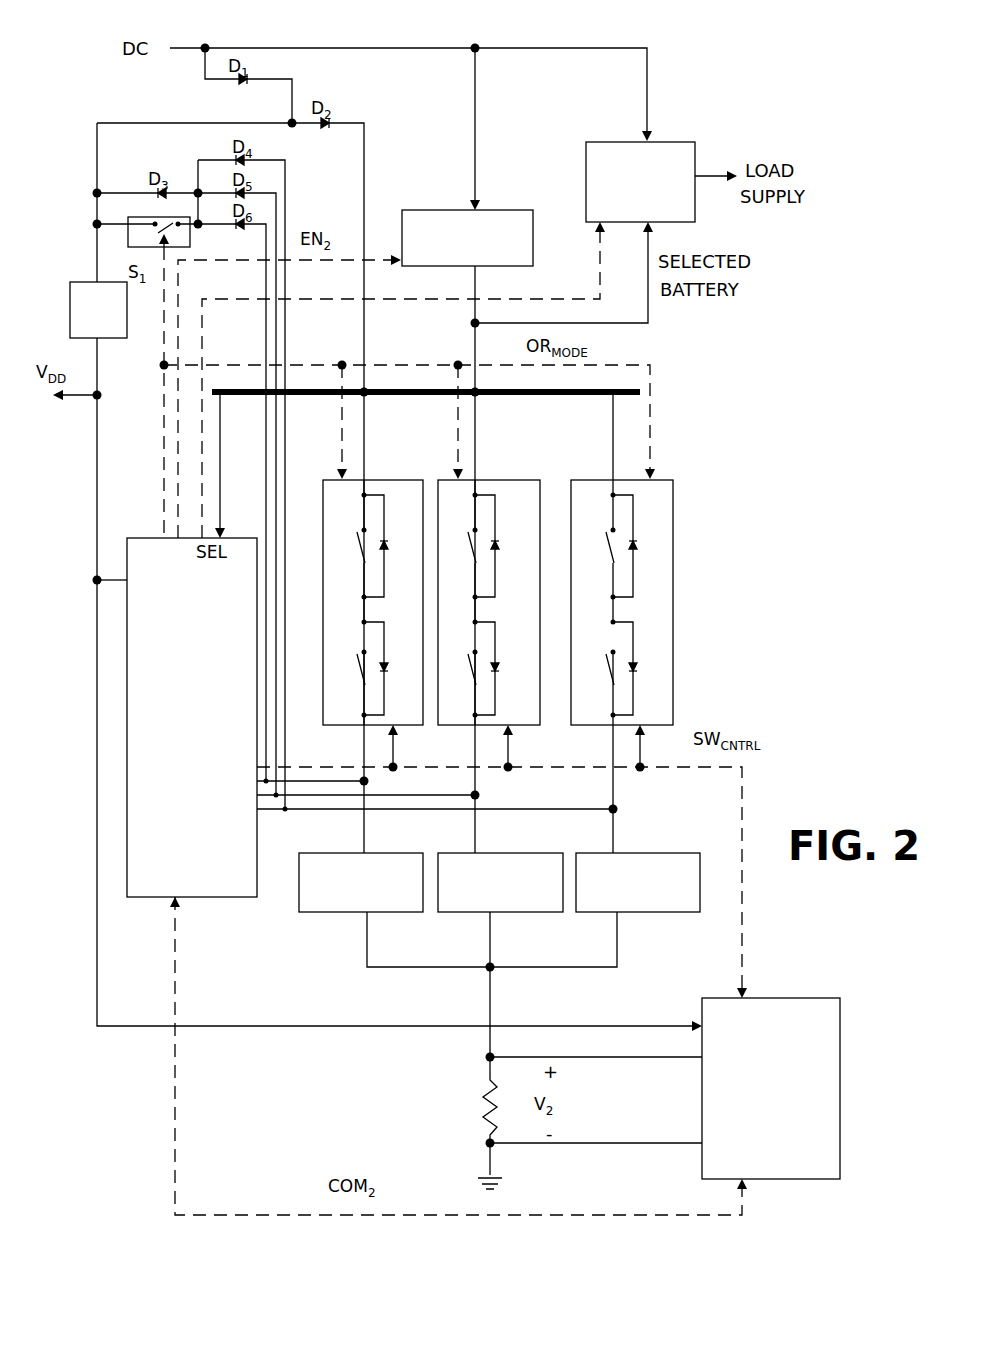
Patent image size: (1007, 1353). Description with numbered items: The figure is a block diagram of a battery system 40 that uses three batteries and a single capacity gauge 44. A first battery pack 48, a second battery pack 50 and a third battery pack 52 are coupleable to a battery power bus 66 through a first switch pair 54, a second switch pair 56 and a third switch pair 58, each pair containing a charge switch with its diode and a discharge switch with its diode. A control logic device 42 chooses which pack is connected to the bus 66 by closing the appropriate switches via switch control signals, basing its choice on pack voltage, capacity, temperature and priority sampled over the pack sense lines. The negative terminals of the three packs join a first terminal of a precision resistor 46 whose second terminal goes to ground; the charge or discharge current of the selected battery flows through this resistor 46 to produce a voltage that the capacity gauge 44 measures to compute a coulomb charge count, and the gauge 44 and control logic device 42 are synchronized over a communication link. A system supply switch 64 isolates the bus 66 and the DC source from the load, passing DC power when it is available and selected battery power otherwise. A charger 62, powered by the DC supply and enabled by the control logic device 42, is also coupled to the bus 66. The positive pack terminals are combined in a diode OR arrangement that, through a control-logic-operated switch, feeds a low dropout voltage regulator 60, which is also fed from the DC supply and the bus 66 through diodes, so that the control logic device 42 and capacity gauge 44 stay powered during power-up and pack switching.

The battery system 40 is at (748, 56).
The control logic device 42 is at (208, 639).
The capacity gauge 44 is at (796, 998).
The precision resistor 46 is at (462, 1102).
The first battery pack 48 is at (390, 853).
The second battery pack 50 is at (521, 853).
The third battery pack 52 is at (666, 853).
The first switch pair 54 is at (380, 480).
The second switch pair 56 is at (494, 480).
The third switch pair 58 is at (664, 480).
The low dropout (LDO) voltage regulator 60 is at (90, 282).
The charger 62 is at (500, 210).
The system supply switch 64 is at (660, 142).
The battery power bus 66 is at (528, 396).